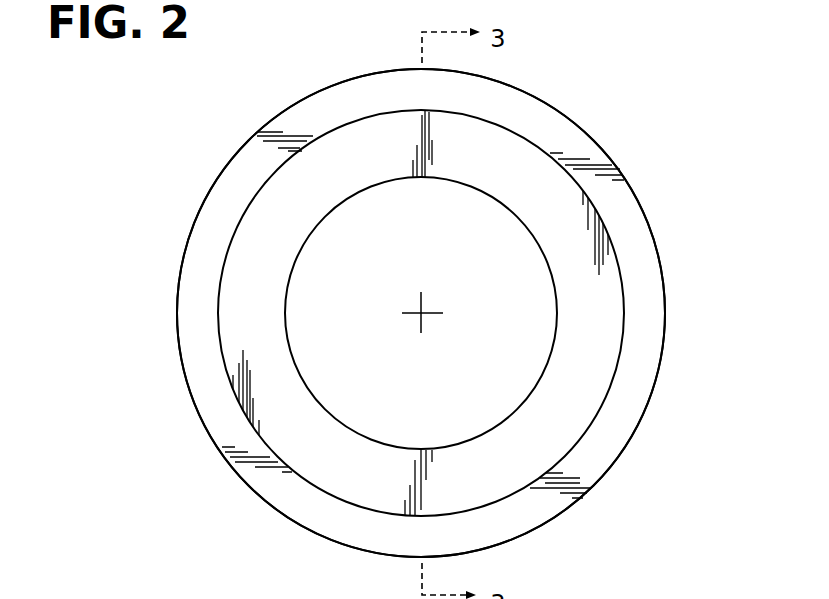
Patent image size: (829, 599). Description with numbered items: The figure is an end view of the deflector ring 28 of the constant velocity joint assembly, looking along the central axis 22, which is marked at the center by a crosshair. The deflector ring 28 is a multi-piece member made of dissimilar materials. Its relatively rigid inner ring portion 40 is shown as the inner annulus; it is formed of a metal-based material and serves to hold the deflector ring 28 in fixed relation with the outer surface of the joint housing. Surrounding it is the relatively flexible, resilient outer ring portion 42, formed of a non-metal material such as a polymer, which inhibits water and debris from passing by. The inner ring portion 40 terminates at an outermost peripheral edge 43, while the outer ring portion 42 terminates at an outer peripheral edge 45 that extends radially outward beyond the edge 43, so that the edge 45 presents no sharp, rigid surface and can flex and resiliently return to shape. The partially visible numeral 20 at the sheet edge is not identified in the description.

The deflector ring 28 is at (627, 111).
The outer peripheral edge 45 is at (612, 158).
The outer ring portion 42 is at (647, 215).
The outermost peripheral edge 43 is at (625, 317).
The inner ring portion 40 is at (513, 213).
The central axis 22 is at (421, 313).
The device 20 is at (236, 597).